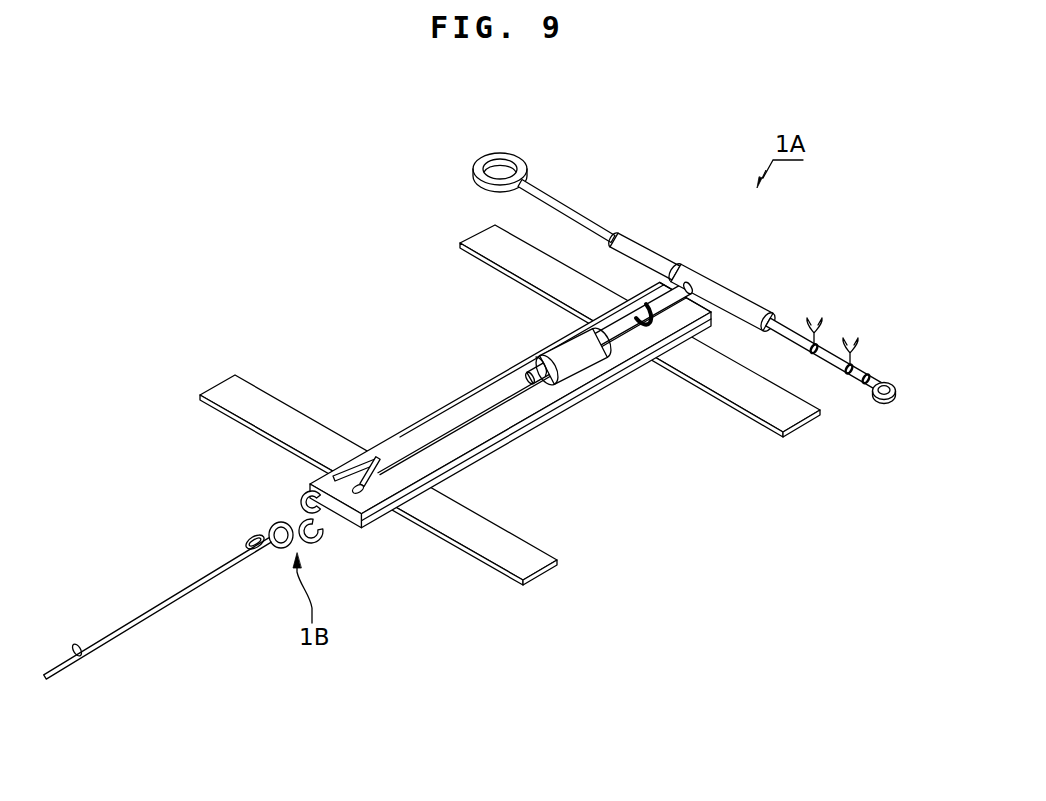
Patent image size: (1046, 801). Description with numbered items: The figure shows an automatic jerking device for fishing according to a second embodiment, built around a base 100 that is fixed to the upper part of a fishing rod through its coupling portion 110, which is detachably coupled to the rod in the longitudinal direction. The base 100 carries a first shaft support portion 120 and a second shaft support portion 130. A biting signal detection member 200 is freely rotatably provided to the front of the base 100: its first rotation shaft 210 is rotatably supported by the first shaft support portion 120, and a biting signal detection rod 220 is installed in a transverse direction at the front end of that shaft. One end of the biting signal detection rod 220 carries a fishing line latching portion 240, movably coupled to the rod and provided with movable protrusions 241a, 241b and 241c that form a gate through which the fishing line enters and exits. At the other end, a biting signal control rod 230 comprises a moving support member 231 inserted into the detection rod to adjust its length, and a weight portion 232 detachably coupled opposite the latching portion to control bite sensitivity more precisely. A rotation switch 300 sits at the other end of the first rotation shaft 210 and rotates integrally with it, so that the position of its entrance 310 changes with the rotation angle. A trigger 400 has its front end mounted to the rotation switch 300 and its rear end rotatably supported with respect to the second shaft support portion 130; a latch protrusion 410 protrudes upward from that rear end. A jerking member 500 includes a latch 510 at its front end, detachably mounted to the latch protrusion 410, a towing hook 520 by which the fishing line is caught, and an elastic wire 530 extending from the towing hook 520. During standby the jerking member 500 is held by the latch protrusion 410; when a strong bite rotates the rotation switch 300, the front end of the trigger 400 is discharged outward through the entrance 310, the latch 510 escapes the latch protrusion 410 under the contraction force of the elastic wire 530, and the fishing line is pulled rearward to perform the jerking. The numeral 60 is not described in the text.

The bar front face 60 is at (410, 463).
The base 100 is at (457, 397).
The coupling portion 110 is at (262, 400).
The first shaft support portion 120 is at (662, 283).
The second shaft support portion 130 is at (358, 524).
The biting signal detection member 200 is at (740, 283).
The first rotation shaft 210 is at (627, 323).
The biting signal detection rod 220 is at (640, 237).
The biting signal control rod 230 is at (533, 161).
The moving support member 231 is at (568, 204).
The weight portion 232 is at (478, 153).
The fishing line latching portion 240 is at (863, 329).
The movable protrusion 241a is at (826, 328).
The movable protrusion 241b is at (851, 343).
The movable protrusion 241c is at (891, 383).
The rotation switch 300 is at (572, 362).
The entrance 310 is at (533, 362).
The trigger 400 is at (482, 433).
The latch protrusion 410 is at (372, 458).
The jerking member 500 is at (221, 568).
The latch 510 is at (318, 545).
The towing hook 520 is at (322, 484).
The elastic wire 530 is at (173, 597).